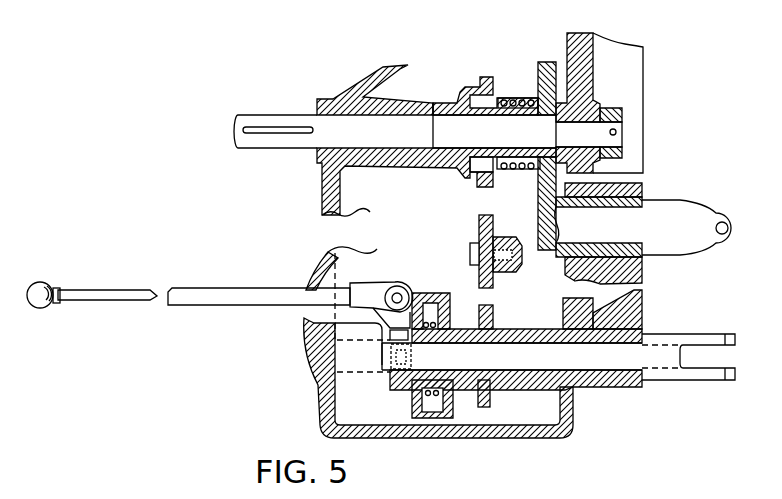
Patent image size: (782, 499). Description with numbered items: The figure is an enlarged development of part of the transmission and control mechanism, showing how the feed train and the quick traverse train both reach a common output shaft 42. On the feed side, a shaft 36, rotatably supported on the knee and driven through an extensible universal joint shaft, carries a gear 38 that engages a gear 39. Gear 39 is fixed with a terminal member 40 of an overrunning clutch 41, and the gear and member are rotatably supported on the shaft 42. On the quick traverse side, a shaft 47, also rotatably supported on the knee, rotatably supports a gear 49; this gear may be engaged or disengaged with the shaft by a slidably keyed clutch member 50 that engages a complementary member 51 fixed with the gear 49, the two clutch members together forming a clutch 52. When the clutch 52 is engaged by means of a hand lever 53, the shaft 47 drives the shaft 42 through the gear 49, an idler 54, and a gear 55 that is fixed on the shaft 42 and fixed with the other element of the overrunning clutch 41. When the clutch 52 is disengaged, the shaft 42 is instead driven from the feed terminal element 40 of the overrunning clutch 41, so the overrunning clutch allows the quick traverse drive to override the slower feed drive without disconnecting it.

The shaft 36 is at (620, 218).
The gear 38 is at (546, 255).
The gear 39 is at (546, 62).
The terminal member 40 is at (497, 97).
The overrunning clutch 41 is at (459, 80).
The shaft 42 is at (300, 149).
The shaft 47 is at (606, 360).
The gear 49 is at (490, 400).
The clutch member 50 is at (412, 405).
The complementary member 51 is at (457, 412).
The clutch 52 is at (428, 282).
The hand lever 53 is at (213, 300).
The idler 54 is at (480, 230).
The gear 55 is at (483, 184).